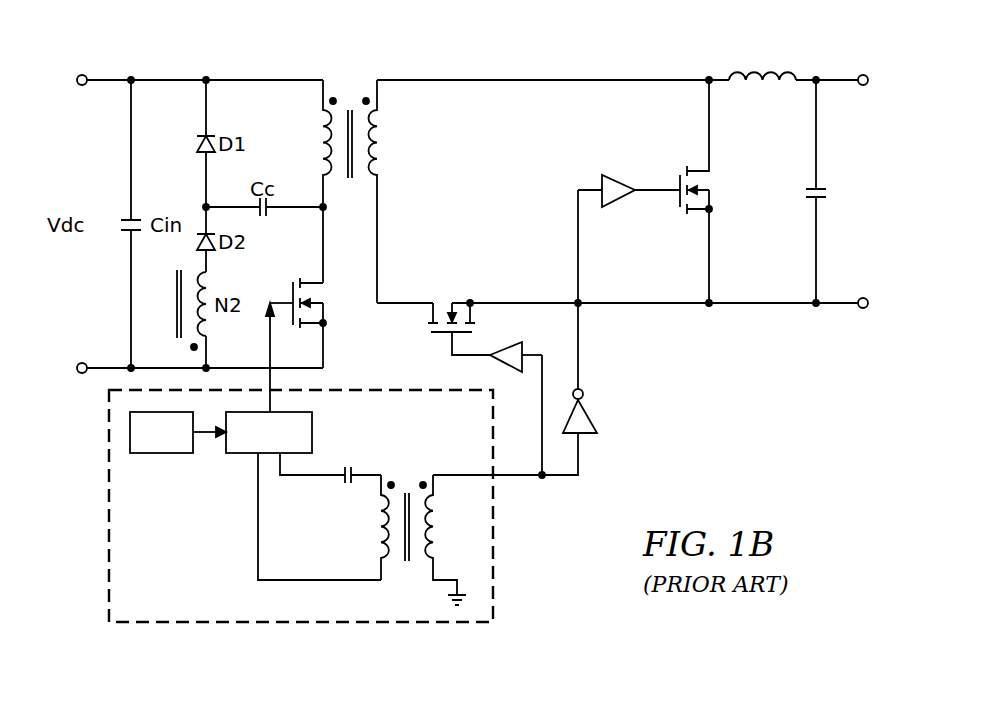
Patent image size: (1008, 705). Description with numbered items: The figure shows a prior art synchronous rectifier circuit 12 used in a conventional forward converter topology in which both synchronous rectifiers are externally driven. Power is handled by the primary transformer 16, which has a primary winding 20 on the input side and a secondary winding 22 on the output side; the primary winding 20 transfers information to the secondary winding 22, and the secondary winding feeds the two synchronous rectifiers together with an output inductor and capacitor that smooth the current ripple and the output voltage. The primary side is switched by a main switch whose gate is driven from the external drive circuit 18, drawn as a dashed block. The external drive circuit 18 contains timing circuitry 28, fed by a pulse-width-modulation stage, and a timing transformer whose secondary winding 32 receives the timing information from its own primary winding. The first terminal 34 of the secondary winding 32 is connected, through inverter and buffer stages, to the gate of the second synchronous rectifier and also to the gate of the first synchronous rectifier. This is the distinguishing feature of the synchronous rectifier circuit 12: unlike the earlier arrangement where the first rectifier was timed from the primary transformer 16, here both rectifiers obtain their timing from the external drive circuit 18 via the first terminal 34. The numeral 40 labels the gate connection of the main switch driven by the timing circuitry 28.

The synchronous rectifier circuit 12 is at (749, 403).
The primary transformer 16 is at (338, 62).
The external drive circuit 18 is at (191, 597).
The primary winding 20 is at (323, 113).
The secondary winding 22 is at (377, 113).
The timing circuitry 28 is at (241, 456).
The secondary winding 32 is at (432, 518).
The first terminal 34 is at (421, 479).
The main switch 40 is at (292, 289).